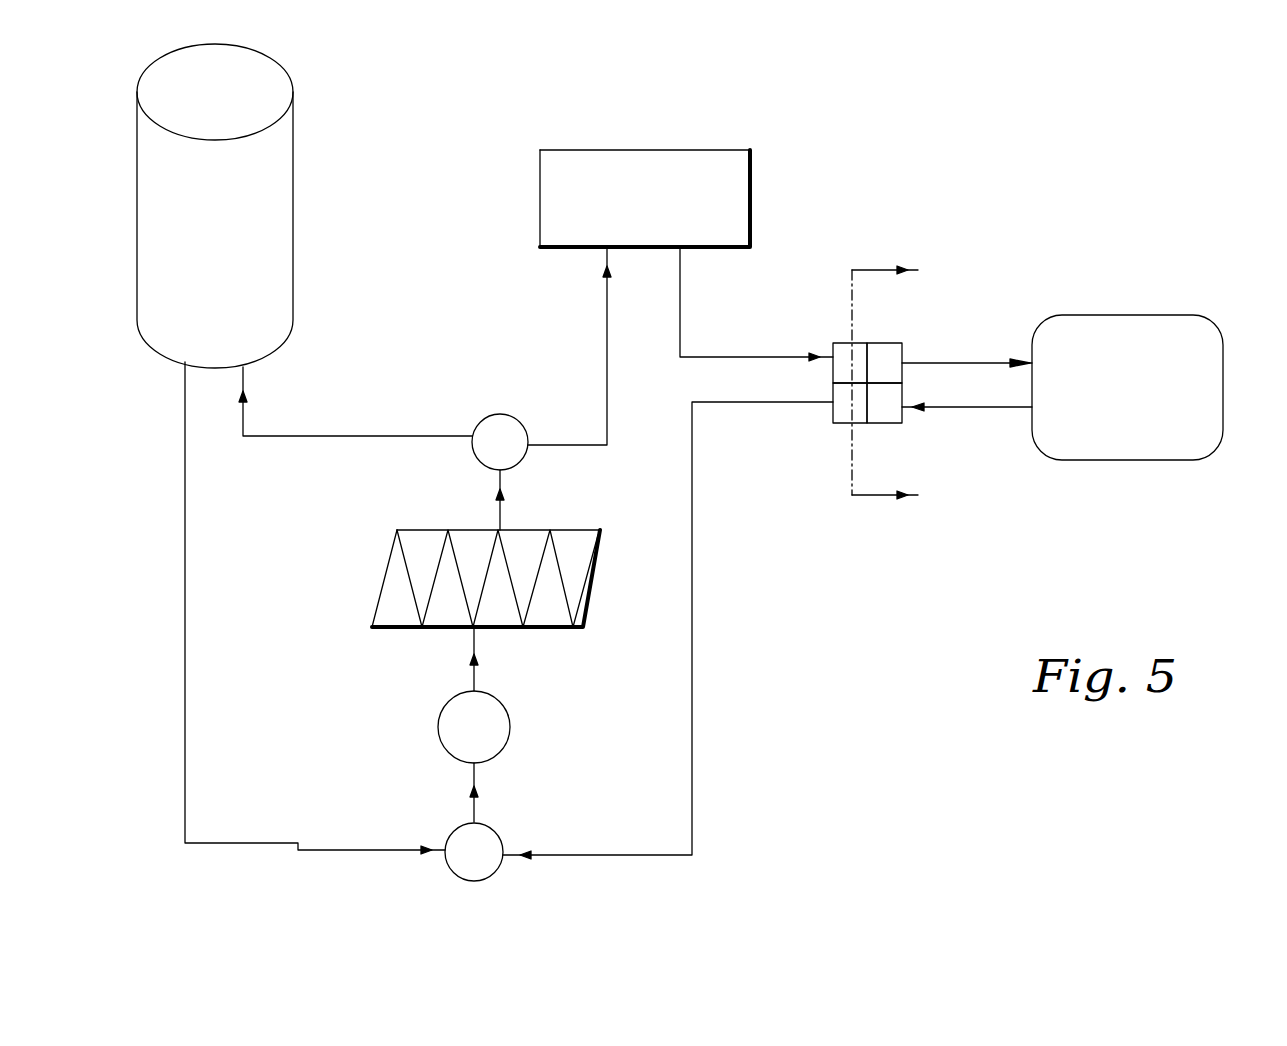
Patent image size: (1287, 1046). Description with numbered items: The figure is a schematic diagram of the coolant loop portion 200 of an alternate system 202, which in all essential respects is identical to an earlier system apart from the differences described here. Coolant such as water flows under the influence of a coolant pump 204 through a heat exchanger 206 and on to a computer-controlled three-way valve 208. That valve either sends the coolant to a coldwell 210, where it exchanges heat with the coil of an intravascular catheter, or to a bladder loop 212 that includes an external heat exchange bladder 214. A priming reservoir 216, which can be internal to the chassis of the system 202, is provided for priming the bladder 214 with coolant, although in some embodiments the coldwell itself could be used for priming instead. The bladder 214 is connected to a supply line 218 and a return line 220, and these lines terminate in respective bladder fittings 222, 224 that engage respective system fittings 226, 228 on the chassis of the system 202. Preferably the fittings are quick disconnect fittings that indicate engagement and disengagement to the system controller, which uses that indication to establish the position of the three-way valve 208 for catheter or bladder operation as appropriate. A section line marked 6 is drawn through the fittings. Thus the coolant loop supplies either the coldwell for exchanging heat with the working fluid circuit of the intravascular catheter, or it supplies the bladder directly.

The coolant loop portion 200 is at (298, 843).
The alternate system 202 is at (873, 682).
The coolant pump 204 is at (493, 708).
The heat exchanger 206 is at (537, 530).
The three-way valve 208 is at (500, 425).
The coldwell 210 is at (278, 158).
The bladder loop 212 is at (692, 713).
The external heat exchange bladder 214 is at (1160, 330).
The priming reservoir 216 is at (731, 185).
The supply line 218 is at (980, 408).
The return line 220 is at (980, 360).
The bladder fitting 222 is at (888, 415).
The bladder fitting 224 is at (888, 350).
The system fitting 226 is at (842, 415).
The system fitting 228 is at (842, 350).
The section line for FIG. 6 is at (902, 385).